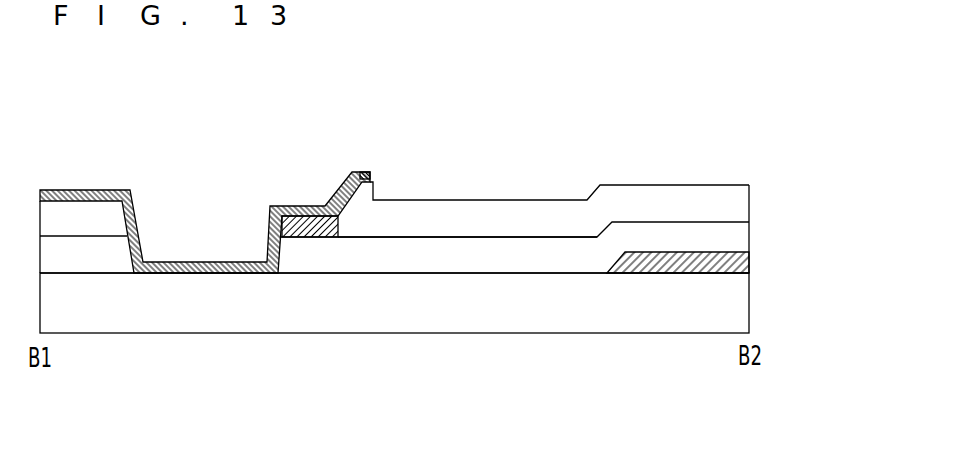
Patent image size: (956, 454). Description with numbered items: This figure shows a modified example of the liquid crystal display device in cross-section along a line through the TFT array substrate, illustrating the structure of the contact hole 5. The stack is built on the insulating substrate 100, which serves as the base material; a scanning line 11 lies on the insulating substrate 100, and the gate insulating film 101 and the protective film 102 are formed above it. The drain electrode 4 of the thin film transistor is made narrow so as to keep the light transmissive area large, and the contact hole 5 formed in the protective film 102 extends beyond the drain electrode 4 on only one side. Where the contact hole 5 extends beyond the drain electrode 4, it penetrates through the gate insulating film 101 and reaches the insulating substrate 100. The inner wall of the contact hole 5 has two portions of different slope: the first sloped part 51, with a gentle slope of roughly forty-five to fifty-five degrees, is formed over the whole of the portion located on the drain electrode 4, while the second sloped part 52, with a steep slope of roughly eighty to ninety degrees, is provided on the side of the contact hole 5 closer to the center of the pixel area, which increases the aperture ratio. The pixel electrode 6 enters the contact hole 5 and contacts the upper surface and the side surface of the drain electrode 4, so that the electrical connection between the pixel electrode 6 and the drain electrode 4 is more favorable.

The insulating substrate 100 is at (741, 304).
The gate insulating film 101 is at (741, 237).
The protective film 102 is at (531, 210).
The scanning line 11 is at (748, 260).
The drain electrode 4 is at (301, 216).
The contact hole 5 is at (323, 282).
The first sloped part 51 is at (334, 181).
The second sloped part 52 is at (146, 205).
The pixel electrode 6 is at (363, 171).